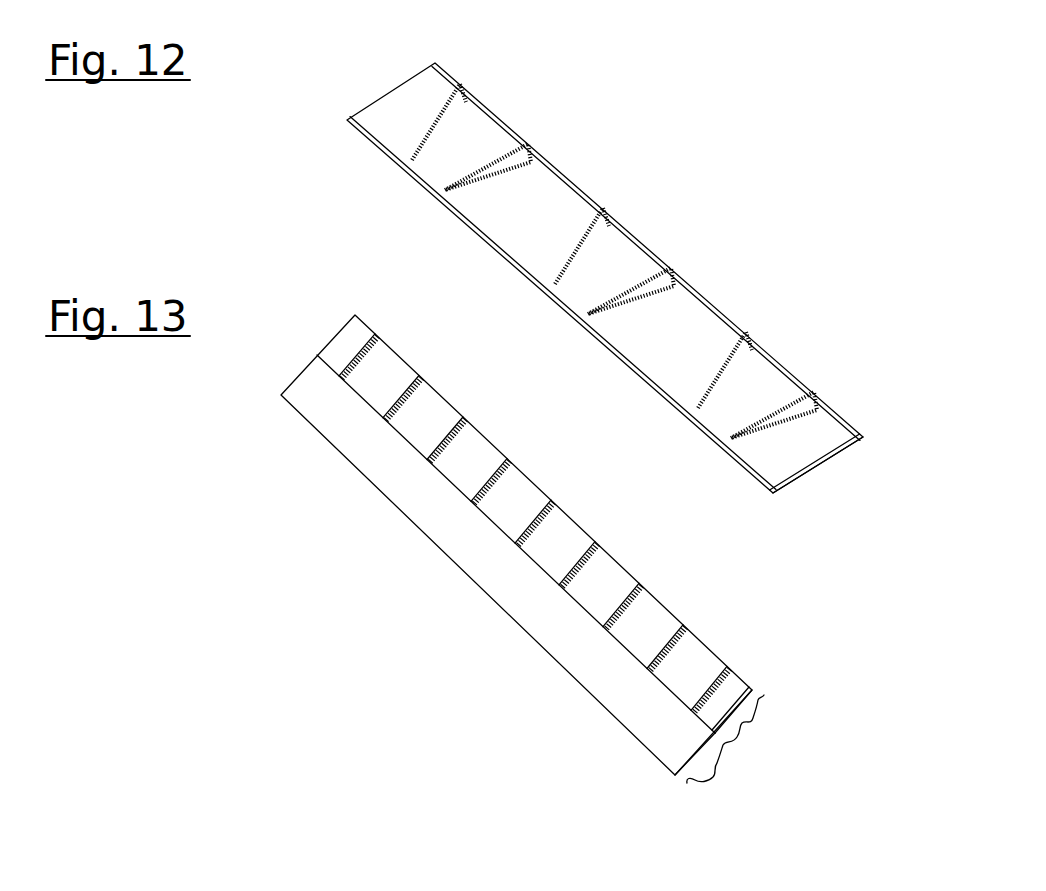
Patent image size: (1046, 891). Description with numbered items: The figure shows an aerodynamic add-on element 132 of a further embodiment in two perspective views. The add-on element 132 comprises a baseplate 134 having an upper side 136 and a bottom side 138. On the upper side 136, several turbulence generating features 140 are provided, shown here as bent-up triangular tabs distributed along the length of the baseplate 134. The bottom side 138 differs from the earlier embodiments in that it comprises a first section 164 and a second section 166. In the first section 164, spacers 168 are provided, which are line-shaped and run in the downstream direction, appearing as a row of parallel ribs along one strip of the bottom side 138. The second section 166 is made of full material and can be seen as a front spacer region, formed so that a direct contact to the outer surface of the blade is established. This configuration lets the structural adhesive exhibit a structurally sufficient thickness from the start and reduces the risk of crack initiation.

In FIG. 12, the add-on element 132 is at (728, 132).
In FIG. 12, the baseplate 134 is at (793, 455).
In FIG. 12, the upper side 136 is at (692, 333).
In FIG. 12, the turbulence generating features 140 is at (527, 143).
In FIG. 13, the bottom side 138 is at (468, 525).
In FIG. 13, the first section 164 is at (720, 777).
In FIG. 13, the second section 166 is at (753, 727).
In FIG. 13, the spacers 168 is at (482, 490).